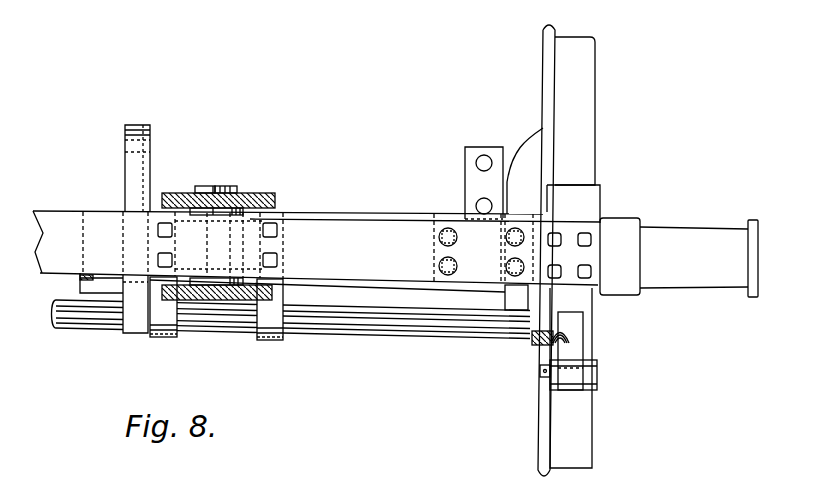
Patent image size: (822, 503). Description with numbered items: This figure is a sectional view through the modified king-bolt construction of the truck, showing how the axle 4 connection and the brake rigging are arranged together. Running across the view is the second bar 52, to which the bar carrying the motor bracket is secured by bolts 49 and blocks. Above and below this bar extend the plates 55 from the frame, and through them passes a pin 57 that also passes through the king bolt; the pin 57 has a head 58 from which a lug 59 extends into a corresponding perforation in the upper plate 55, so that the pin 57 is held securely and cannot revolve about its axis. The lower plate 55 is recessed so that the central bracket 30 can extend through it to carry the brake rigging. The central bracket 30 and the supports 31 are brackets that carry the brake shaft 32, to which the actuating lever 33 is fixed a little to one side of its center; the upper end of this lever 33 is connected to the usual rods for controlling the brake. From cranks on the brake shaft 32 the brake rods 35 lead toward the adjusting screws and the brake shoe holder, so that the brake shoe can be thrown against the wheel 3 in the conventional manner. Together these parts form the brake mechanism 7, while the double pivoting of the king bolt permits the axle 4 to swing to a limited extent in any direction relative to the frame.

The wheels 3 is at (538, 457).
The axles 4 is at (675, 228).
The brake mechanism 7 is at (568, 368).
The central bracket 30 is at (257, 339).
The supports 31 is at (528, 340).
The brake shaft 32 is at (433, 325).
The actuating lever 33 is at (125, 129).
The brake rods 35 is at (597, 378).
The bolts 49 is at (262, 261).
The second bar 52 is at (378, 227).
The plates 55 is at (267, 197).
The pin 57 is at (221, 186).
The head 58 is at (232, 186).
The lug 59 is at (215, 190).